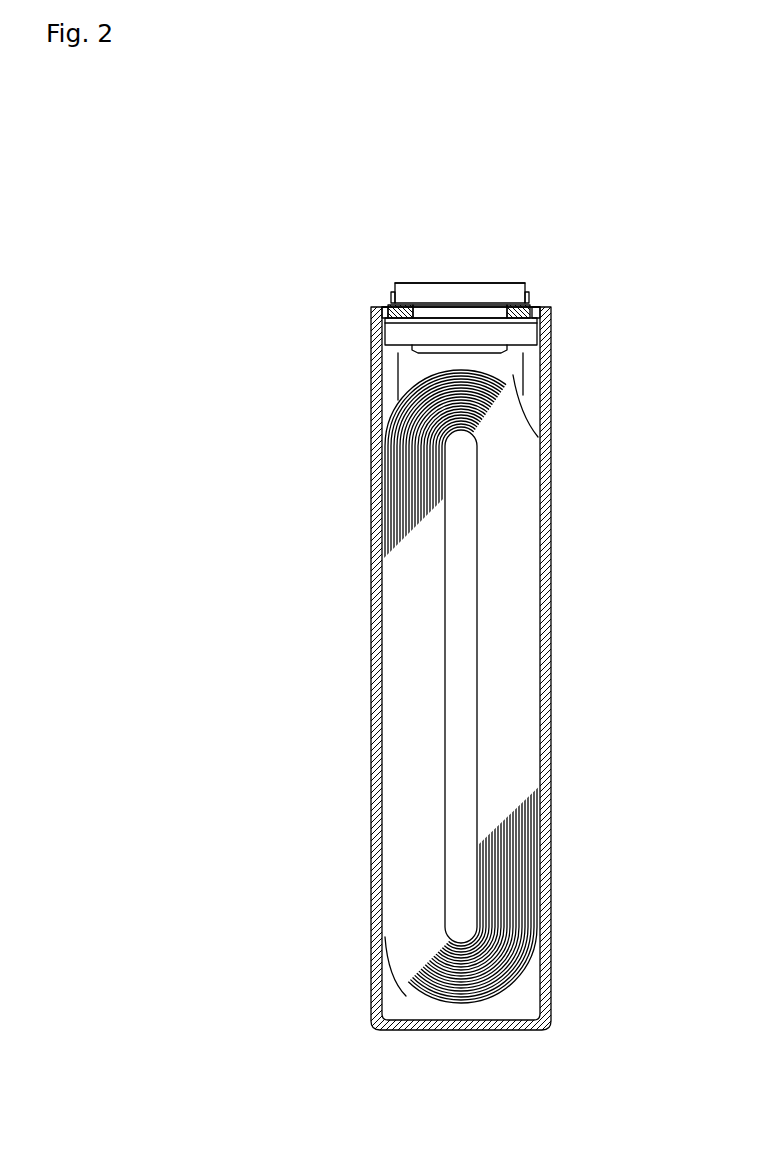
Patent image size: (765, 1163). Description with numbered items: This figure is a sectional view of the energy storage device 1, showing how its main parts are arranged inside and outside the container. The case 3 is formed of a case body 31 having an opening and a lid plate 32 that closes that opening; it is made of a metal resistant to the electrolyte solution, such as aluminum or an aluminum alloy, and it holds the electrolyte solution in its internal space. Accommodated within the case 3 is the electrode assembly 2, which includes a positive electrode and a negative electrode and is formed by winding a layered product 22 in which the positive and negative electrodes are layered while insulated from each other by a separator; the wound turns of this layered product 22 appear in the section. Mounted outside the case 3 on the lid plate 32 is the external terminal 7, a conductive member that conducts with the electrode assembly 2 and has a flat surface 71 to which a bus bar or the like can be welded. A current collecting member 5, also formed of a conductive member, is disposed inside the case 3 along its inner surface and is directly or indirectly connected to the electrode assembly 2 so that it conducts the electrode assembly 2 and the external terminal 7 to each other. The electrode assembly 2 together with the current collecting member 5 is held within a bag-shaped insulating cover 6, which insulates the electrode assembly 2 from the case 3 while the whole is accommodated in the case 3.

The energy storage device 1 is at (592, 186).
The electrode assembly 2 is at (500, 365).
The layered product 22 is at (537, 407).
The case 3 is at (237, 297).
The case body 31 is at (372, 358).
The lid plate 32 is at (381, 298).
The current collecting member 5 is at (397, 382).
The insulating cover 6 is at (383, 995).
The external terminal 7 is at (448, 282).
The surface 71 is at (474, 283).